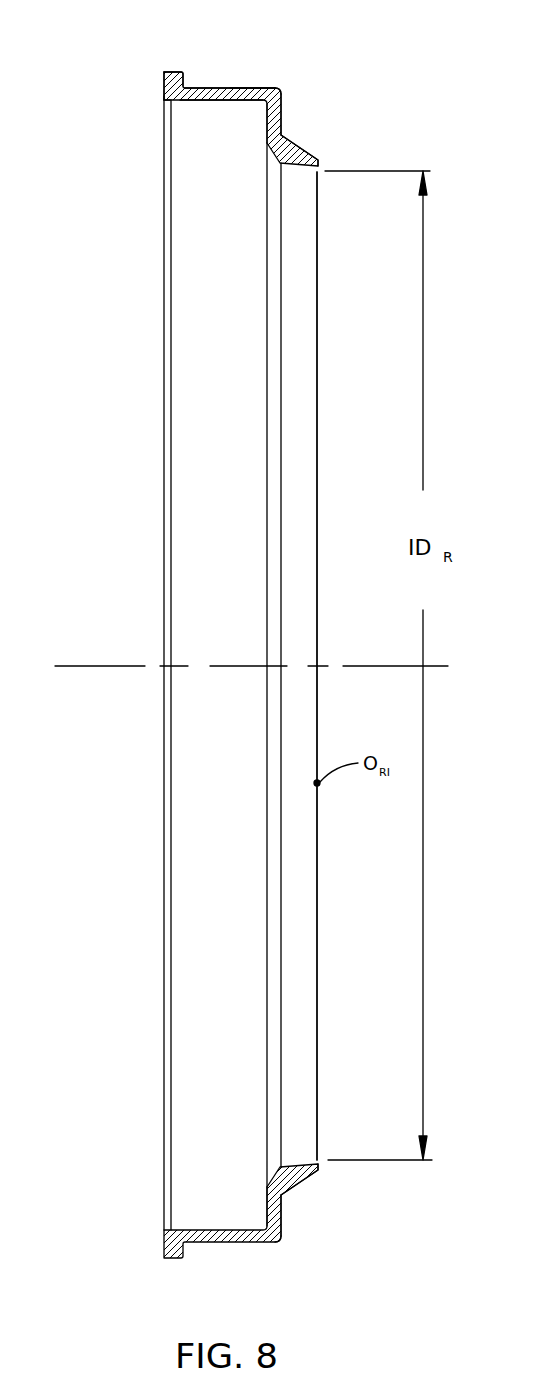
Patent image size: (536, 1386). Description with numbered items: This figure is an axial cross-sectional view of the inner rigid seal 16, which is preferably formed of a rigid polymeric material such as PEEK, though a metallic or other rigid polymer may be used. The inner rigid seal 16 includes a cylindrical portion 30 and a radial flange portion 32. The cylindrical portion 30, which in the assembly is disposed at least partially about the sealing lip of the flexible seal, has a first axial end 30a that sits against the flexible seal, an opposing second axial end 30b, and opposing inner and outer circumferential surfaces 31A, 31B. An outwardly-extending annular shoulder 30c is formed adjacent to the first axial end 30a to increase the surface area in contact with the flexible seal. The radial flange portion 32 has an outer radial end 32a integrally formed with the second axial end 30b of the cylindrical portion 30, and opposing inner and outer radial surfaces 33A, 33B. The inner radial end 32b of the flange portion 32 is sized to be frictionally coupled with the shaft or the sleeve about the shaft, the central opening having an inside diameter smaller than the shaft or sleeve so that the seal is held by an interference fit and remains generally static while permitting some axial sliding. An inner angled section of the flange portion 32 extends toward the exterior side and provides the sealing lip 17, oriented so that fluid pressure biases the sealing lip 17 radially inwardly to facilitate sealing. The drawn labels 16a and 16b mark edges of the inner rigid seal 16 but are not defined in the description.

The inner rigid seal 16 is at (296, 31).
The inner bevelled edge of ring 16a is at (326, 156).
The outer edge of ring 16b is at (156, 80).
The sealing lip 17 is at (313, 273).
The cylindrical portion 30 is at (222, 82).
The first axial end 30a is at (162, 101).
The second axial end 30b is at (276, 90).
The outwardly-extending annular shoulder 30c is at (176, 71).
The inner circumferential surface 31A is at (215, 105).
The outer circumferential surface 31B is at (248, 86).
The radial flange portion 32 is at (292, 114).
The outer radial end 32a is at (281, 1228).
The inner radial end 32b is at (308, 1155).
The inner radial surface 33A is at (270, 1209).
The outer radial surface 33B is at (280, 1206).